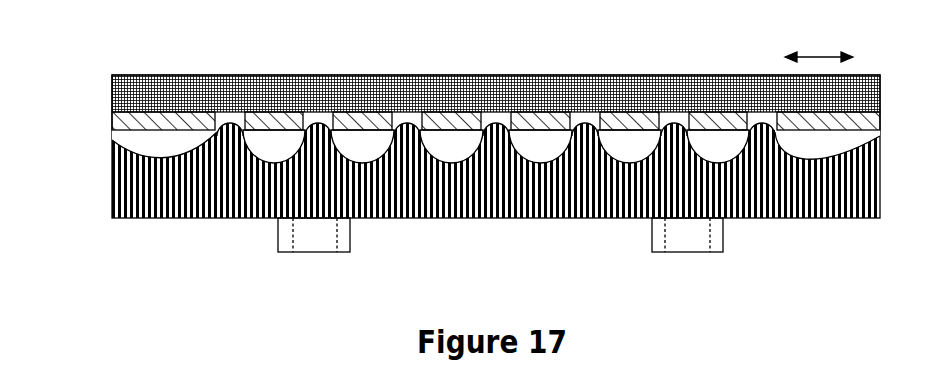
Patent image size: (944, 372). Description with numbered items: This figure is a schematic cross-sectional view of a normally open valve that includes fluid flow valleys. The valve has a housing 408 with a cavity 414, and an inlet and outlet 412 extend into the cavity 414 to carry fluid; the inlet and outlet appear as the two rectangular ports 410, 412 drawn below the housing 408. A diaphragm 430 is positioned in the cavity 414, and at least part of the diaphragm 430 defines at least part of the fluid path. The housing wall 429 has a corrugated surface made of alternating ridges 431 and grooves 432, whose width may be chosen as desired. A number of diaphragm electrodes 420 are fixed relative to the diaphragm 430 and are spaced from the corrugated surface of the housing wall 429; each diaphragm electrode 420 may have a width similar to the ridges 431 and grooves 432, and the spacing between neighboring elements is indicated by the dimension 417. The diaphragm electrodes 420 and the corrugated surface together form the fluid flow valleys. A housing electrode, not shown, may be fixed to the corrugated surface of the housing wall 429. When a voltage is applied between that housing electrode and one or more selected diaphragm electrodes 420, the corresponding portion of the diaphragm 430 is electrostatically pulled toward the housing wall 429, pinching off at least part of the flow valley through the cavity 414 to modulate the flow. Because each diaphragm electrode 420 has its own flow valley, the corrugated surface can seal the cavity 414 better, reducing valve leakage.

The housing 408 is at (112, 191).
The first post 410 is at (318, 253).
The inlet and outlet 412 is at (692, 253).
The cavity 414 is at (548, 144).
The pitch 417 is at (819, 45).
The diaphragm electrodes 420 is at (360, 112).
The housing wall 429 is at (582, 218).
The diaphragm 430 is at (722, 95).
The ridges 431 is at (230, 120).
The grooves 432 is at (165, 156).